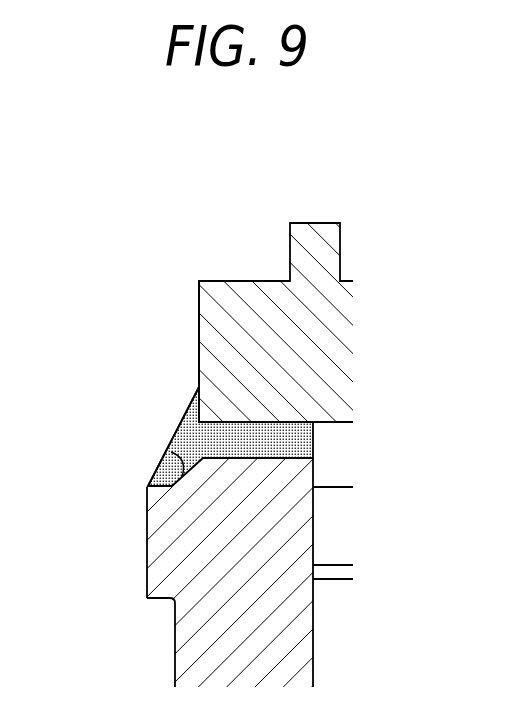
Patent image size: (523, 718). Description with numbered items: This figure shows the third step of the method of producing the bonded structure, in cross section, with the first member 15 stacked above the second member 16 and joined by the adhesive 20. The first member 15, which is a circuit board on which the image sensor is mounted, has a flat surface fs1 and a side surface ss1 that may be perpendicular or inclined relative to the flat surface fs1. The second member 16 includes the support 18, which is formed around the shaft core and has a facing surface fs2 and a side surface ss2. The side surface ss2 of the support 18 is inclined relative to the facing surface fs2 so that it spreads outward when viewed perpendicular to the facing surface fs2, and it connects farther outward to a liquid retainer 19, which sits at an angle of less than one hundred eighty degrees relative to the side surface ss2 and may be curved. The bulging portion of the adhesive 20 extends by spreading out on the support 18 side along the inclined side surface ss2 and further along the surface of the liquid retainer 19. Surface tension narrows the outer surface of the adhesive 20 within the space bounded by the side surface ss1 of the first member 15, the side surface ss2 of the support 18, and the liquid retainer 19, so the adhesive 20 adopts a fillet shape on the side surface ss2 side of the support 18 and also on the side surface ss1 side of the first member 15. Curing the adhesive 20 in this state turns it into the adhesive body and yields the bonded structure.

The first member 15 is at (288, 350).
The second member 16 is at (141, 547).
The support 18 is at (218, 637).
The liquid retainer 19 is at (153, 476).
The adhesive 20 is at (183, 428).
The side surface ss1 is at (199, 333).
The side surface ss2 is at (167, 452).
The flat surface fs1 is at (318, 423).
The facing surface fs2 is at (283, 457).